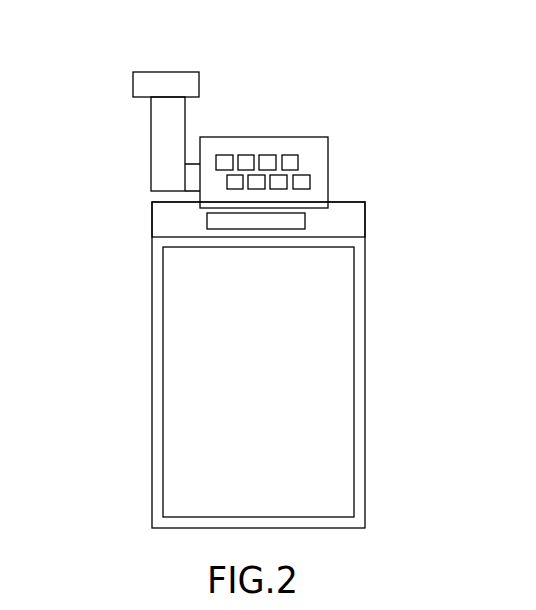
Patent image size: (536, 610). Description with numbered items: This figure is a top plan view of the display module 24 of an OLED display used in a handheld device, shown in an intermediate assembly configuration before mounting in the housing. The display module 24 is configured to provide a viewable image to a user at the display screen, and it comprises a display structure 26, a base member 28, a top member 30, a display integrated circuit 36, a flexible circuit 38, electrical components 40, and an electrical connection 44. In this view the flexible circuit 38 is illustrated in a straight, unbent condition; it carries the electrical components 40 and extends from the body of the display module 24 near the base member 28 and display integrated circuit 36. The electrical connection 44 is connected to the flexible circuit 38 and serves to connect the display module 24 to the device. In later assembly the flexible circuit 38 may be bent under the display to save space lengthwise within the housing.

The display module 24 is at (122, 48).
The display structure 26 is at (293, 348).
The base member 28 is at (355, 217).
The top member 30 is at (153, 490).
The display integrated circuit 36 is at (307, 223).
The flexible circuit 38 is at (313, 198).
The electrical components 40 is at (267, 162).
The electrical connection 44 is at (142, 85).